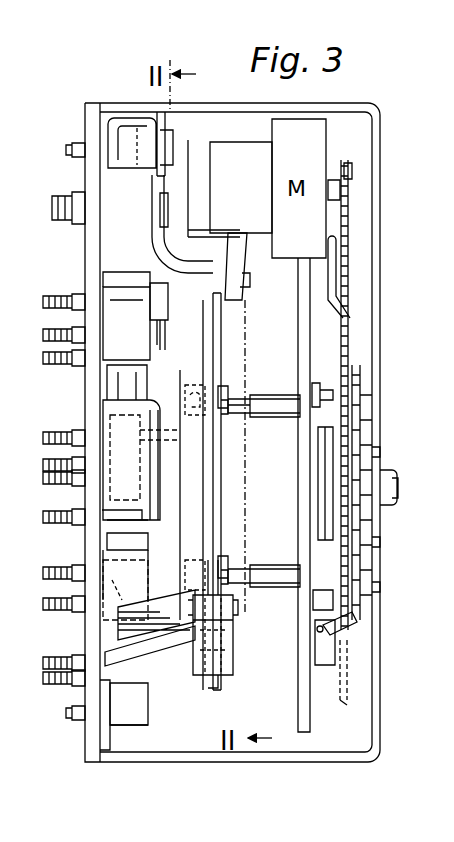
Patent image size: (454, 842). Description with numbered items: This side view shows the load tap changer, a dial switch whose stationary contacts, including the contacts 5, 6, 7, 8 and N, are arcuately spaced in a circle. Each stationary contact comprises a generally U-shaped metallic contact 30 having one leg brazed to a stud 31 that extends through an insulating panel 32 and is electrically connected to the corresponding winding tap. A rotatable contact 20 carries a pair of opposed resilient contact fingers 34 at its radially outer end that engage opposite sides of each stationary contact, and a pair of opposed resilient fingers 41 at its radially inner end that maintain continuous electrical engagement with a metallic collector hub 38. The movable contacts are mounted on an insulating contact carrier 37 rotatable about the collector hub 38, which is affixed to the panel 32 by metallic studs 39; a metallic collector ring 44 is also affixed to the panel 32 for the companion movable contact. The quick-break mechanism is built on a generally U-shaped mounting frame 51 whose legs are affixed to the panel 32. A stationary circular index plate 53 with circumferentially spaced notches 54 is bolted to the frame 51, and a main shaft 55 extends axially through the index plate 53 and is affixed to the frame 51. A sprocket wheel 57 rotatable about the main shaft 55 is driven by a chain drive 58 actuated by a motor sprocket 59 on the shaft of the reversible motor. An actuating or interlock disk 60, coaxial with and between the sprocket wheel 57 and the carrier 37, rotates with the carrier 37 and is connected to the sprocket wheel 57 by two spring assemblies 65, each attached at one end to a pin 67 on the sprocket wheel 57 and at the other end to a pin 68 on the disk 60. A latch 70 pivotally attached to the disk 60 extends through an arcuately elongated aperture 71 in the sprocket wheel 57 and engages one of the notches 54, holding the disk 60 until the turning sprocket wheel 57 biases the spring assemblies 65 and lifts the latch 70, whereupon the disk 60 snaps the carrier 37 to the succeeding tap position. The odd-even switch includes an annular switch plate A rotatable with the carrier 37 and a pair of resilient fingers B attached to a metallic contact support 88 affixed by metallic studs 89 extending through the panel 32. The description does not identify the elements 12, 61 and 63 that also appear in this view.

The stationary contact 5 is at (142, 722).
The stationary contact 6 is at (148, 576).
The stationary contact 7 is at (110, 430).
The stationary contact 8 is at (110, 356).
The upper bracket 12 is at (130, 135).
The rotatable contact 20 is at (165, 354).
The U-shaped metallic contact 30 is at (126, 506).
The stud 31 is at (44, 336).
The insulating panel 32 is at (88, 751).
The resilient contact fingers 34 is at (166, 303).
The insulating contact carrier 37 is at (187, 549).
The metallic collector hub 38 is at (233, 478).
The metallic studs 39 is at (44, 515).
The resilient fingers 41 is at (231, 492).
The metallic collector ring 44 is at (125, 590).
The U-shaped mounting frame 51 is at (375, 734).
The stationary circular index plate 53 is at (360, 378).
The notches 54 is at (357, 620).
The main shaft 55 is at (397, 485).
The sprocket wheel 57 is at (345, 706).
The chain drive 58 is at (350, 228).
The motor sprocket 59 is at (352, 172).
The actuating or interlock disk 60 is at (300, 337).
The gear shaft 61 is at (232, 402).
The cam 63 is at (200, 418).
The spring assemblies 65 is at (320, 446).
The pin 67 is at (324, 603).
The pin 68 is at (316, 390).
The latch 70 is at (345, 633).
The arcuately elongated aperture 71 is at (348, 672).
The metallic contact support 88 is at (158, 663).
The metallic studs 89 is at (58, 628).
The annular switch plate A is at (220, 330).
The resilient contact fingers B is at (232, 640).
The stationary contact N is at (100, 280).